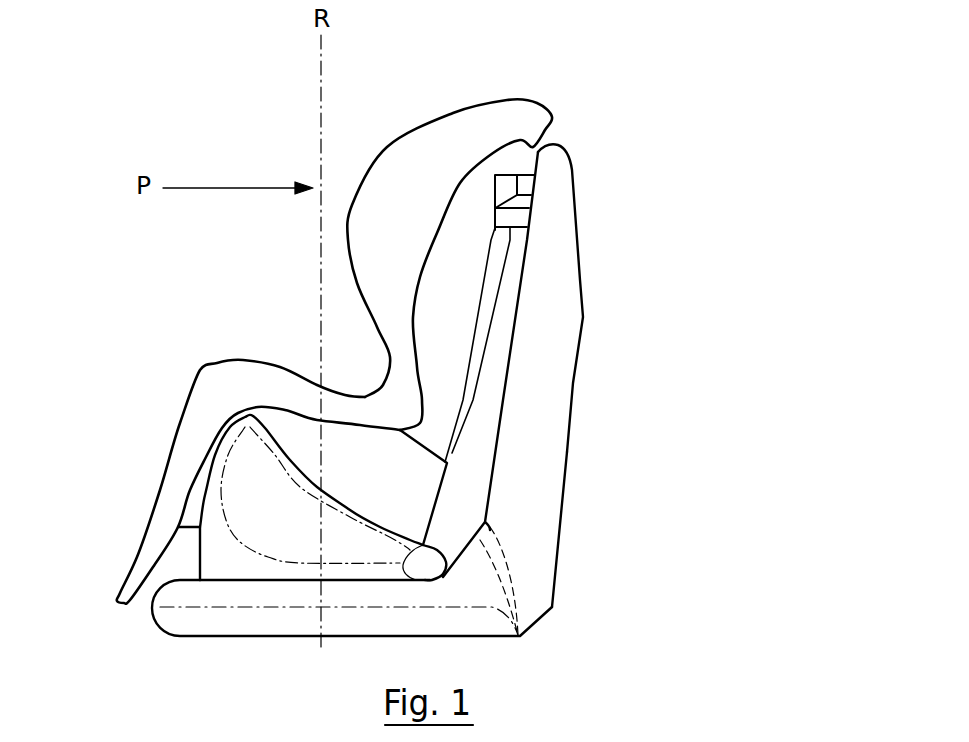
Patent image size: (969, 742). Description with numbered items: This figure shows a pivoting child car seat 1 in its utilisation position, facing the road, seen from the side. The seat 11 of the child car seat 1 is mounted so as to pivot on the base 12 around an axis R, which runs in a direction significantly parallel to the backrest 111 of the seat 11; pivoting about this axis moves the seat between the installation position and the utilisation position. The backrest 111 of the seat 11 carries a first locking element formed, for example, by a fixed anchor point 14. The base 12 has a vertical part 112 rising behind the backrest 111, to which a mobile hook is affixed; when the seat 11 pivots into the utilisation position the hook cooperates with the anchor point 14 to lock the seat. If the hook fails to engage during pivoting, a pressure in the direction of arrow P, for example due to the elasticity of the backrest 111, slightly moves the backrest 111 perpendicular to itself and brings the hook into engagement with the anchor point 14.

The pivoting child car seat 1 is at (350, 120).
The seat 11 is at (185, 457).
The backrest 111 is at (383, 183).
The base 12 is at (567, 452).
The vertical part 112 is at (552, 270).
The fixed anchor point 14 is at (522, 183).